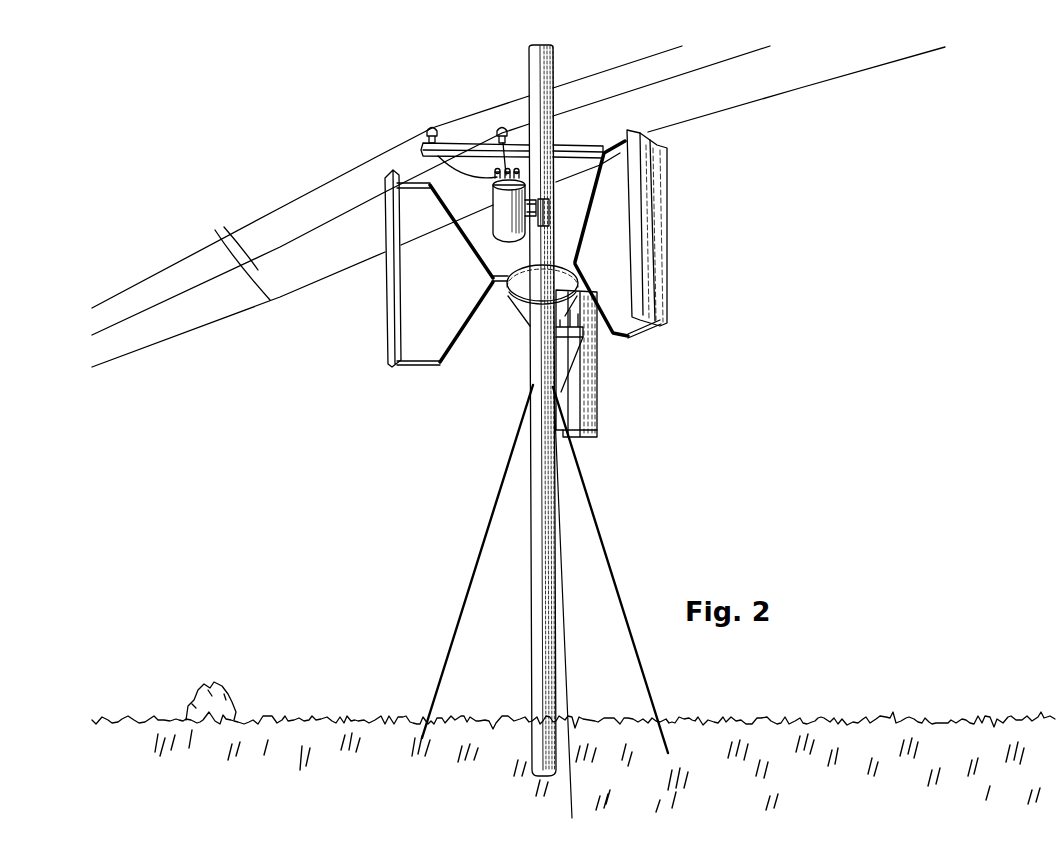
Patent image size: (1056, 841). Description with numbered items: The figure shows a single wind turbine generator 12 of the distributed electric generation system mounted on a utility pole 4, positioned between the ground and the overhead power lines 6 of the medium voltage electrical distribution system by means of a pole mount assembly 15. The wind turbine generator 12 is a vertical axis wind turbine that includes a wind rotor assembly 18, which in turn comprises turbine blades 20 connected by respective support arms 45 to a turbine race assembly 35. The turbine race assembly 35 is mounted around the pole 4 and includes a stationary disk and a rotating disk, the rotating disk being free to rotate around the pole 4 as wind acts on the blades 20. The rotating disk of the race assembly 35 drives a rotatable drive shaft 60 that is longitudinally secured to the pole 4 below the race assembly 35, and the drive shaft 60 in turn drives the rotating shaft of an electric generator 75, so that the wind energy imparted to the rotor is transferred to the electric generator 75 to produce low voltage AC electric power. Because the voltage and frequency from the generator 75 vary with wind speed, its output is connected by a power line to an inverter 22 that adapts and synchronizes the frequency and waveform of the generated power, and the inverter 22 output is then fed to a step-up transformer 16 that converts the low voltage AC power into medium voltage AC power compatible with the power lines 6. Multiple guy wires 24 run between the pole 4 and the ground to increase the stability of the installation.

The pole 4 is at (536, 45).
The power lines 6 is at (216, 246).
The wind turbine generator 12 is at (682, 228).
The pole mount assembly 15 is at (517, 305).
The step-up transformer 16 is at (493, 191).
The wind rotor assembly 18 is at (503, 277).
The turbine blades 20 is at (662, 279).
The inverter 22 is at (548, 210).
The guy wires 24 is at (602, 543).
The turbine race assembly 35 is at (559, 286).
The support arms 45 is at (424, 364).
The drive shaft 60 is at (568, 312).
The electric generator 75 is at (598, 359).